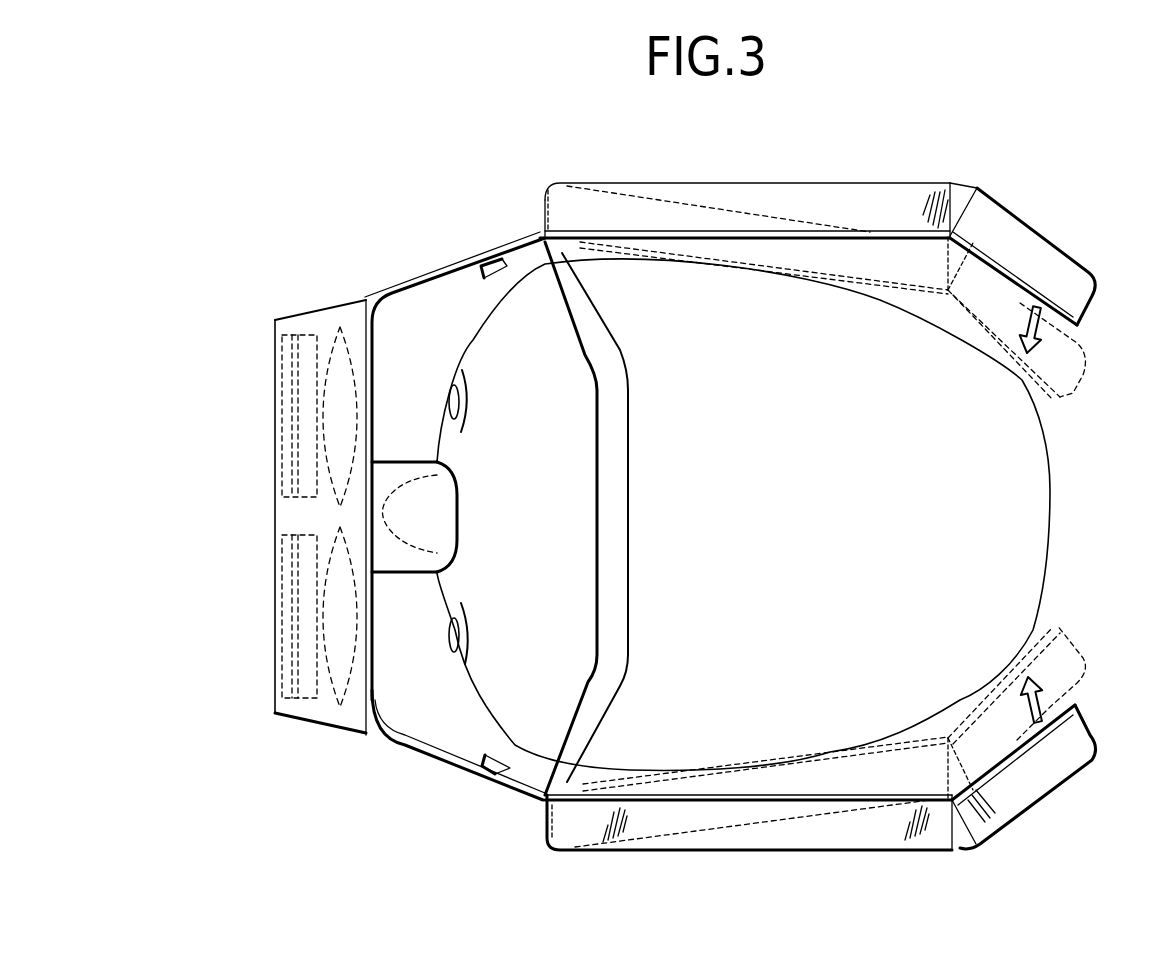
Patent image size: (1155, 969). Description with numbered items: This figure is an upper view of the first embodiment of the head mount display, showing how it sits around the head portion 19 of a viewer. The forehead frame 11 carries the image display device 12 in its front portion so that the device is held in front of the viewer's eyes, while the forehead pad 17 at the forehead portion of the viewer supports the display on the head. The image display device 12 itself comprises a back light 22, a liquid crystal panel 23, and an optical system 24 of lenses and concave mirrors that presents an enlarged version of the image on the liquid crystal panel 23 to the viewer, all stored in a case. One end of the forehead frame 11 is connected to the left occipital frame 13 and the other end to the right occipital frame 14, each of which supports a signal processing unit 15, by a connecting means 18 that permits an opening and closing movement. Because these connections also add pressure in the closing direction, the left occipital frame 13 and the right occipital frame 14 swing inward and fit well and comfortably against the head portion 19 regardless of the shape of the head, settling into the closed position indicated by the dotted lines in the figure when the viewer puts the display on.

The forehead frame 11 is at (623, 552).
The image display device 12 is at (296, 526).
The left occipital frame 13 is at (1075, 705).
The right occipital frame 14 is at (1077, 325).
The signal processing unit 15 is at (832, 183).
The forehead pad 17 is at (450, 504).
The connecting means 18 is at (478, 276).
The head portion of a viewer 19 is at (1051, 490).
The back light 22 is at (272, 333).
The liquid crystal panel 23 is at (307, 340).
The optical system 24 is at (342, 340).